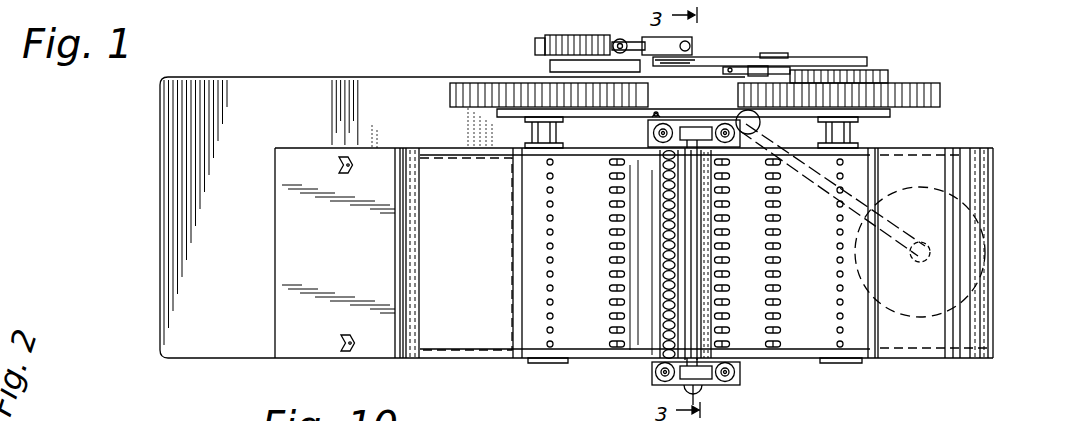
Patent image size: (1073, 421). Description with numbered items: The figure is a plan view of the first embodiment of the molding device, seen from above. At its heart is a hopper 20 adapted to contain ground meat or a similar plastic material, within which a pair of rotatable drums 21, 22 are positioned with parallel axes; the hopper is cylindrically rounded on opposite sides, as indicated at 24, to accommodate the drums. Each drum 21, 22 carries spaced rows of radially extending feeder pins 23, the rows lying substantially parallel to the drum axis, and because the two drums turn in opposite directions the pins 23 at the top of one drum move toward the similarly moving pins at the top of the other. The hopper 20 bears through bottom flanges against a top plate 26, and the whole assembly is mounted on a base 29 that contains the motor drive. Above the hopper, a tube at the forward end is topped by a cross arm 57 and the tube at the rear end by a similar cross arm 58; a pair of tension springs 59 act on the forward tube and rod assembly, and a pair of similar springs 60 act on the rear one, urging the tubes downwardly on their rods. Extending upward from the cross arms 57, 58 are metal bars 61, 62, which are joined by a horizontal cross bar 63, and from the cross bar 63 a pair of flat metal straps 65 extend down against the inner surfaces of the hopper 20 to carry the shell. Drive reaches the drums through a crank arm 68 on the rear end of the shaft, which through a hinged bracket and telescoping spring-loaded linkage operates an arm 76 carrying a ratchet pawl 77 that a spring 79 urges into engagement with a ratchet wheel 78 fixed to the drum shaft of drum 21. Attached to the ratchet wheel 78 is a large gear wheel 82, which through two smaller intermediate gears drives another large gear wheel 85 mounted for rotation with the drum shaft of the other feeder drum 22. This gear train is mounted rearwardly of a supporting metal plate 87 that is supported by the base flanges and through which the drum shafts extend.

The hopper 20 is at (873, 167).
The drum 21 is at (809, 247).
The drum 22 is at (582, 250).
The feeder pins 23 is at (555, 288).
The cylindrically rounded sides 24 is at (457, 250).
The top plate 26 is at (353, 250).
The base 29 is at (222, 250).
The cross arm 57 is at (722, 382).
The cross arm 58 is at (665, 120).
The tension springs 59 is at (656, 117).
The springs 60 is at (741, 367).
The metal bar 61 is at (706, 393).
The metal bar 62 is at (700, 130).
The cross bar 63 is at (694, 237).
The flat metal straps 65 is at (668, 168).
The crank arm 68 is at (555, 66).
The arm 76 is at (727, 60).
The ratchet pawl 77 is at (790, 68).
The ratchet wheel 78 is at (888, 74).
The spring 79 is at (748, 68).
The gear wheel 82 is at (942, 97).
The gear wheel 85 is at (452, 90).
The supporting metal plate 87 is at (858, 117).